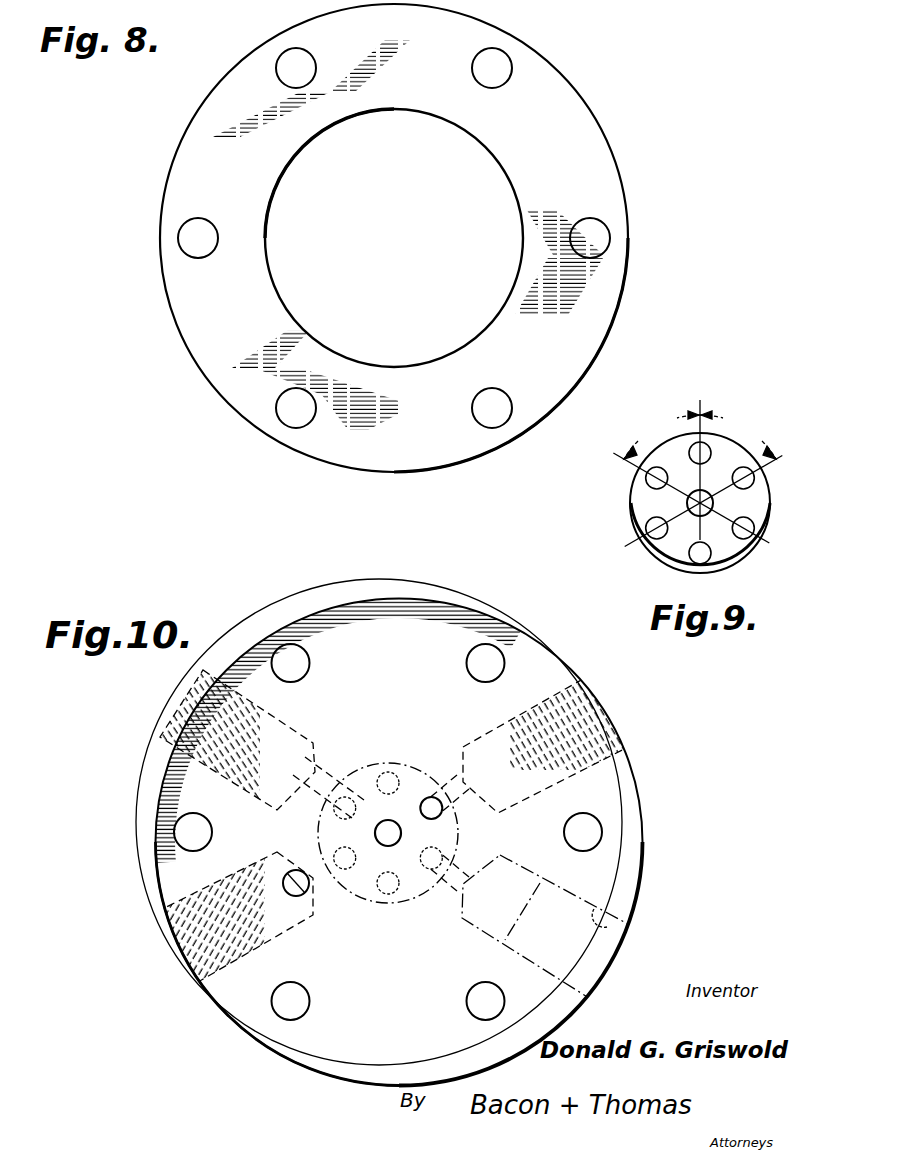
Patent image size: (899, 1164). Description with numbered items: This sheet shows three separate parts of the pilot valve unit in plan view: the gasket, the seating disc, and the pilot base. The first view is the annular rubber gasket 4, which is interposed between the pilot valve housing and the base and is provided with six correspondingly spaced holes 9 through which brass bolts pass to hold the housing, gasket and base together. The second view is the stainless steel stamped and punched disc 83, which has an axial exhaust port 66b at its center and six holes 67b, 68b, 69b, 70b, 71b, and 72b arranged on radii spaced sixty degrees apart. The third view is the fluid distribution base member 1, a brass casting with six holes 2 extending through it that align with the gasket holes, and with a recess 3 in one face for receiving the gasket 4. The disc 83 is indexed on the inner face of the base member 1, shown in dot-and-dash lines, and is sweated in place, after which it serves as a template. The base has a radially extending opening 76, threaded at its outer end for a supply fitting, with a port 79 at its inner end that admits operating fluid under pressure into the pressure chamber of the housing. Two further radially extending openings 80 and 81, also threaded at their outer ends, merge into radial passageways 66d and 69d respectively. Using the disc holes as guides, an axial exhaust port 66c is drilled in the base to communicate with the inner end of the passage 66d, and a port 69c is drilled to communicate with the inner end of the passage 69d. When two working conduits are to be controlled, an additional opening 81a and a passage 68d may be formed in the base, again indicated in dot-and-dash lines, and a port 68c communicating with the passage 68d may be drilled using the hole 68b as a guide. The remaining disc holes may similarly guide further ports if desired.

In FIG. 8, the annular rubber gasket 4 is at (208, 358).
In FIG. 8, the holes 9 is at (285, 54).
In FIG. 9, the disc 83 is at (628, 512).
In FIG. 10, the disc 83 is at (382, 765).
In FIG. 9, the axial exhaust port 66b is at (706, 494).
In FIG. 9, the hole 67b is at (694, 560).
In FIG. 9, the hole 68b is at (747, 536).
In FIG. 9, the hole 69b is at (749, 484).
In FIG. 9, the hole 70b is at (692, 452).
In FIG. 9, the hole 71b is at (648, 478).
In FIG. 9, the hole 72b is at (650, 530).
In FIG. 10, the fluid distribution base member 1 is at (526, 668).
In FIG. 10, the holes 2 is at (308, 660).
In FIG. 10, the recess 3 is at (410, 612).
In FIG. 10, the radially extending opening 76 is at (192, 990).
In FIG. 10, the port 79 is at (308, 888).
In FIG. 10, the radially extending opening 80 is at (160, 736).
In FIG. 10, the radially extending opening 81 is at (590, 680).
In FIG. 10, the additional opening 81a is at (612, 928).
In FIG. 10, the axial exhaust port 66c is at (398, 842).
In FIG. 10, the radial passageway 66d is at (330, 778).
In FIG. 10, the port 68c is at (440, 842).
In FIG. 10, the passage 68d is at (462, 870).
In FIG. 10, the port 69c is at (436, 798).
In FIG. 10, the radial passageway 69d is at (458, 800).